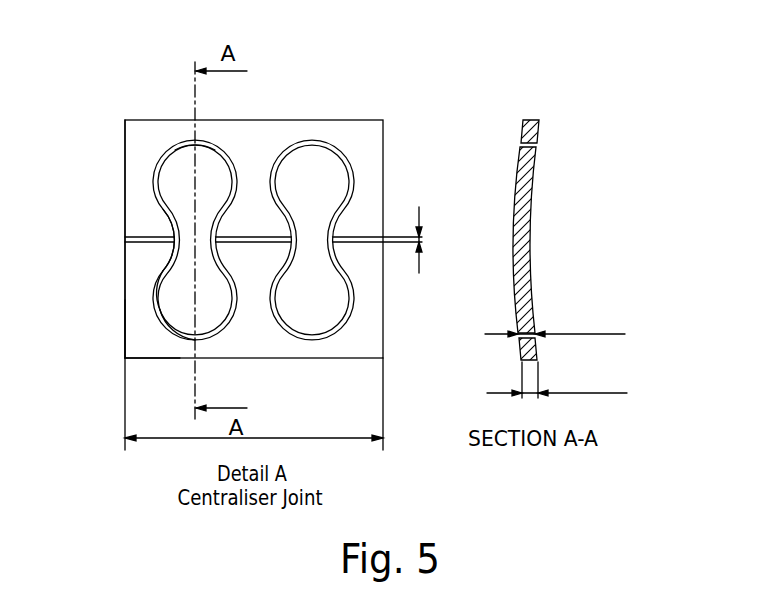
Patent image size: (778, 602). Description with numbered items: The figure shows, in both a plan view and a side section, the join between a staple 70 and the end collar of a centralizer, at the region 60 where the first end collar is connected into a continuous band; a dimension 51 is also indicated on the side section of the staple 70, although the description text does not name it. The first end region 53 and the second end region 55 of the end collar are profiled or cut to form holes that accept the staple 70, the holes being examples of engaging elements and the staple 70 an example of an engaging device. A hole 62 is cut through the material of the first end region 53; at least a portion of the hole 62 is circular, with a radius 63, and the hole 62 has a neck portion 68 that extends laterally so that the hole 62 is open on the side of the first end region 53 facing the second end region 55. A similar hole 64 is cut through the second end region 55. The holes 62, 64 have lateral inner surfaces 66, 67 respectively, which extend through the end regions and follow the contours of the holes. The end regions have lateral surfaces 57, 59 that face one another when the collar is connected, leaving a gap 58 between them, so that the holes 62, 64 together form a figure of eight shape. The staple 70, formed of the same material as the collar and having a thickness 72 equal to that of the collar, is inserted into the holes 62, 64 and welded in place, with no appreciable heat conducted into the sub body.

The slot width 51 is at (627, 395).
The first end region 53 is at (167, 133).
The second end region 55 is at (137, 347).
The lateral surface 57 is at (357, 238).
The gap 58 is at (419, 207).
The lateral surface 59 is at (360, 243).
The region 60 is at (113, 320).
The hole 62 is at (162, 160).
The radius 63 is at (392, 78).
The hole 64 is at (163, 275).
The lateral inner surface 66 is at (222, 140).
The lateral inner surface 67 is at (173, 335).
The neck portion 68 is at (175, 227).
The staple 70 is at (205, 305).
The thickness 72 is at (640, 335).